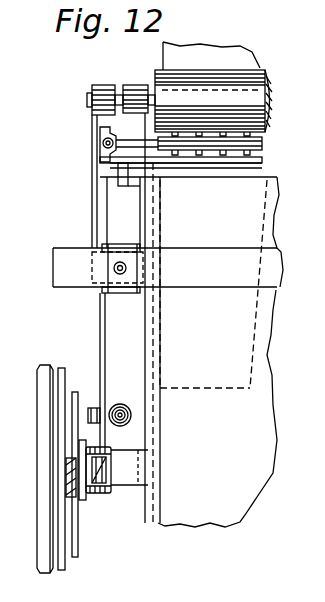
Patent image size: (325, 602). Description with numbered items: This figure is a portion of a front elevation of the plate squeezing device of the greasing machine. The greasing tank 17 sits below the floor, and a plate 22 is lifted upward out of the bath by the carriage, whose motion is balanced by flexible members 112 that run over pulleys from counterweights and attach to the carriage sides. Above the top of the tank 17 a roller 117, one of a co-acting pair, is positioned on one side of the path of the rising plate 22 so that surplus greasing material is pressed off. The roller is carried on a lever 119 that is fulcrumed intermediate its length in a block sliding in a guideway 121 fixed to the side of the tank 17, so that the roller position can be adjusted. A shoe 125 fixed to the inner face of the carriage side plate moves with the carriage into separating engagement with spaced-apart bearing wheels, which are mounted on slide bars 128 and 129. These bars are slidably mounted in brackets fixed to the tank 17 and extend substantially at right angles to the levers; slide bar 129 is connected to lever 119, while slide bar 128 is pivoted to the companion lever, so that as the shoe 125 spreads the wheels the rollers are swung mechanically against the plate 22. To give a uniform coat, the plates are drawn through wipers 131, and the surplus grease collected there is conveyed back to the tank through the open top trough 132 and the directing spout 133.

The roller 117 is at (213, 89).
The wipers 131 is at (258, 138).
The plate 22 is at (235, 176).
The directing spout 133 is at (118, 180).
The open top trough 132 is at (217, 163).
The guideways 121 is at (122, 244).
The flexible members 112 is at (115, 271).
The shoe 125 is at (78, 398).
The lever 119 is at (106, 366).
The slide bar 128 is at (110, 451).
The greasing tank 17 is at (216, 345).
The slide bar 129 is at (100, 495).